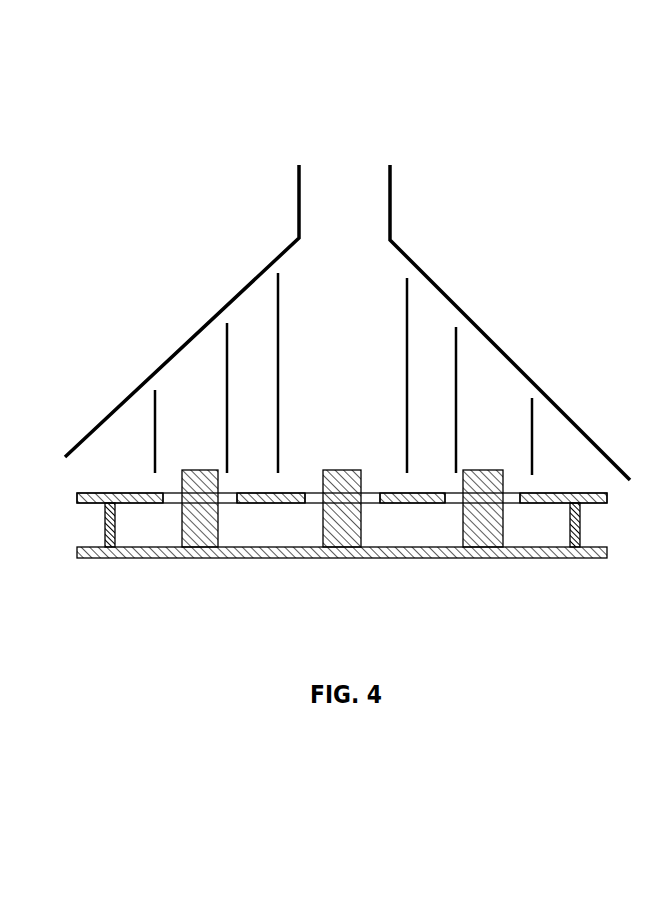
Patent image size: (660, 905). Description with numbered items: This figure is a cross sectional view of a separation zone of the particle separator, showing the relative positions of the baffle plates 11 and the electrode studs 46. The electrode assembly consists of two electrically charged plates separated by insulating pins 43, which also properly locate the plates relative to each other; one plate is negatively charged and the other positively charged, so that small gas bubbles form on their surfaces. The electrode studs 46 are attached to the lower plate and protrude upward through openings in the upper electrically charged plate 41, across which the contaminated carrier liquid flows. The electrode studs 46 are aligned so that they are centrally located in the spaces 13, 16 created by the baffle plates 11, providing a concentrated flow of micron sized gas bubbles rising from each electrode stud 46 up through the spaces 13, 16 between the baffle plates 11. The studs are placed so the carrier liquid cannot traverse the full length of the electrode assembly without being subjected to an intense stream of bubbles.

The baffle plate 11 is at (152, 397).
The space 13 is at (187, 370).
The space 16 is at (340, 275).
The upper electrically charged plate 41 is at (600, 497).
The insulating pin 43 is at (112, 557).
The electrode stud 46 is at (192, 523).